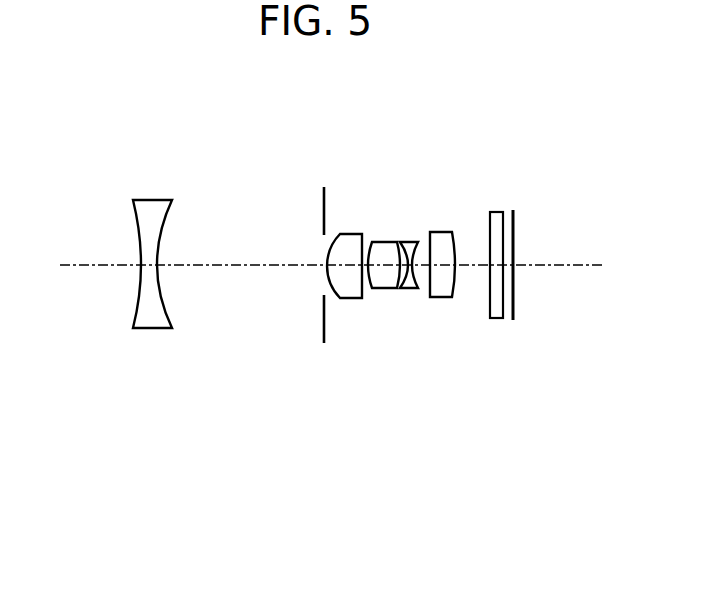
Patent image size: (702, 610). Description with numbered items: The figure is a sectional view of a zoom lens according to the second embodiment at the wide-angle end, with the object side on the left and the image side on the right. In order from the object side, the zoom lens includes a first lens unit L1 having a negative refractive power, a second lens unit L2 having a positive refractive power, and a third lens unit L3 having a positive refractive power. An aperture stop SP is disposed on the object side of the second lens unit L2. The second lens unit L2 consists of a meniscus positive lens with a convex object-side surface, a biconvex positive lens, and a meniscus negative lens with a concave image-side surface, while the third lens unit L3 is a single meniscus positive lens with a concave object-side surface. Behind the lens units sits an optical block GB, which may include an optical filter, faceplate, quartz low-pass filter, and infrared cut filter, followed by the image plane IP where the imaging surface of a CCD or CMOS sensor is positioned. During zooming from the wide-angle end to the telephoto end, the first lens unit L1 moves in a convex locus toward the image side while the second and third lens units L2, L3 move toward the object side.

The first lens unit L1 is at (178, 480).
The second lens unit L2 is at (339, 473).
The third lens unit L3 is at (420, 477).
The aperture stop SP is at (323, 211).
The optical block GB is at (495, 211).
The image plane IP is at (514, 222).